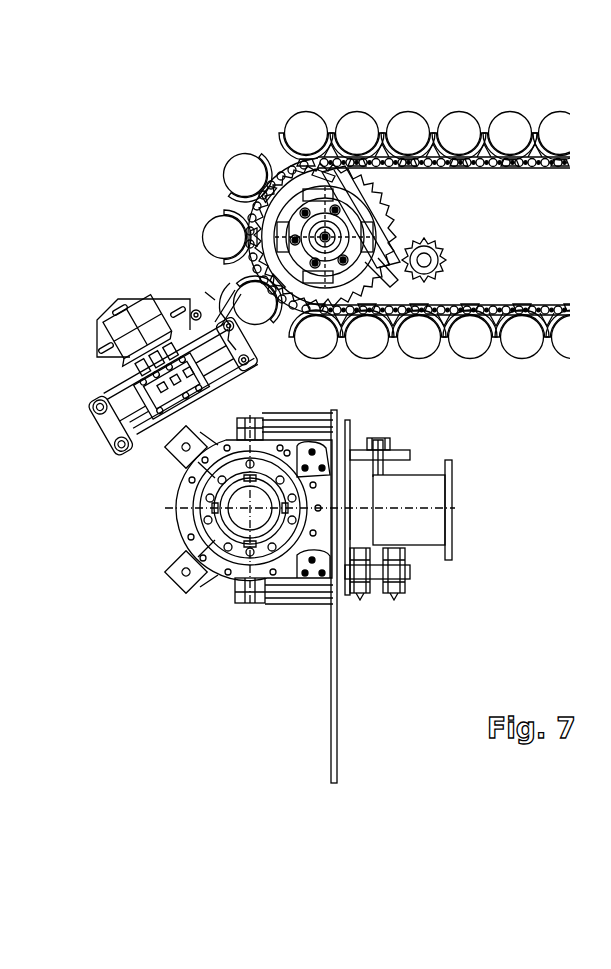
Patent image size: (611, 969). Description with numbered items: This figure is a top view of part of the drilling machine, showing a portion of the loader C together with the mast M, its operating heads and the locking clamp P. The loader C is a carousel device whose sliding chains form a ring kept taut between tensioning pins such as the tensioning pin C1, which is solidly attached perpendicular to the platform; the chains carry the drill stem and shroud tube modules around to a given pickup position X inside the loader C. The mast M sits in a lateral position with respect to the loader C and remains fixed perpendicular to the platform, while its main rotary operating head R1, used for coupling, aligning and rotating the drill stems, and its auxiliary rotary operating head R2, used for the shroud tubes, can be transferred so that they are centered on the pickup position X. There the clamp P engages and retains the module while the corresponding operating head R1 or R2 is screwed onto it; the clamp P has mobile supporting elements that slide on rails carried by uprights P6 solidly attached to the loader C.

The loader C is at (546, 110).
The tensioning shaft or pin C1 is at (330, 235).
The pickup position X is at (236, 298).
The upright P6 is at (100, 333).
The clamp P is at (77, 419).
The main rotary operating head R1 is at (238, 552).
The auxiliary rotary operating head R2 is at (278, 616).
The mast M is at (427, 545).